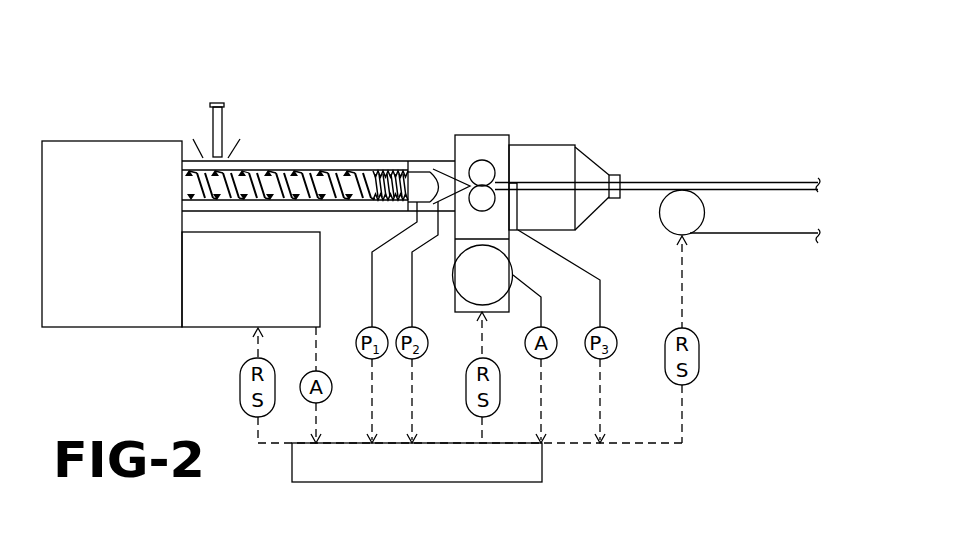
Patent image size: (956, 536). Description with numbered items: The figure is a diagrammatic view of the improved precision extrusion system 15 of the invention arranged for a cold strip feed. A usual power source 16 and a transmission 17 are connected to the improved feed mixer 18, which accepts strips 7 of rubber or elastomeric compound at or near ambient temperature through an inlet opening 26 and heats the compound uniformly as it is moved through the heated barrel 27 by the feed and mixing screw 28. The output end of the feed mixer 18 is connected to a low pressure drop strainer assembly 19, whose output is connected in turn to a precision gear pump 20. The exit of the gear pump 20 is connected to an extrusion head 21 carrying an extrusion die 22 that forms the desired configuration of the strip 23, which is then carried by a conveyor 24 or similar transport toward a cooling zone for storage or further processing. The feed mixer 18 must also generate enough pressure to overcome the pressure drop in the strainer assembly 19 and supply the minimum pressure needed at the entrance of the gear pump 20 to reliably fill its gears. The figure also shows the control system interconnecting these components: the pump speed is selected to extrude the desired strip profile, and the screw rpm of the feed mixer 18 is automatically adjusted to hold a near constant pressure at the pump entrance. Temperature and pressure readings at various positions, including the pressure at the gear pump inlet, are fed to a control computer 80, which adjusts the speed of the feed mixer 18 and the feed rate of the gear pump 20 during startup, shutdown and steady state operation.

The strips 7 is at (212, 128).
The improved precision extrusion system 15 is at (383, 144).
The power source 16 is at (235, 292).
The transmission 17 is at (95, 292).
The feed mixer 18 is at (253, 159).
The low pressure drop strainer assembly 19 is at (423, 160).
The precision gear pump 20 is at (488, 134).
The extrusion head 21 is at (548, 144).
The extrusion die 22 is at (621, 175).
The strip 23 is at (725, 187).
The conveyor 24 is at (750, 235).
The inlet opening 26 is at (229, 142).
The heated barrel 27 is at (279, 163).
The feed and mixing screw 28 is at (313, 162).
The control computer 80 is at (395, 482).